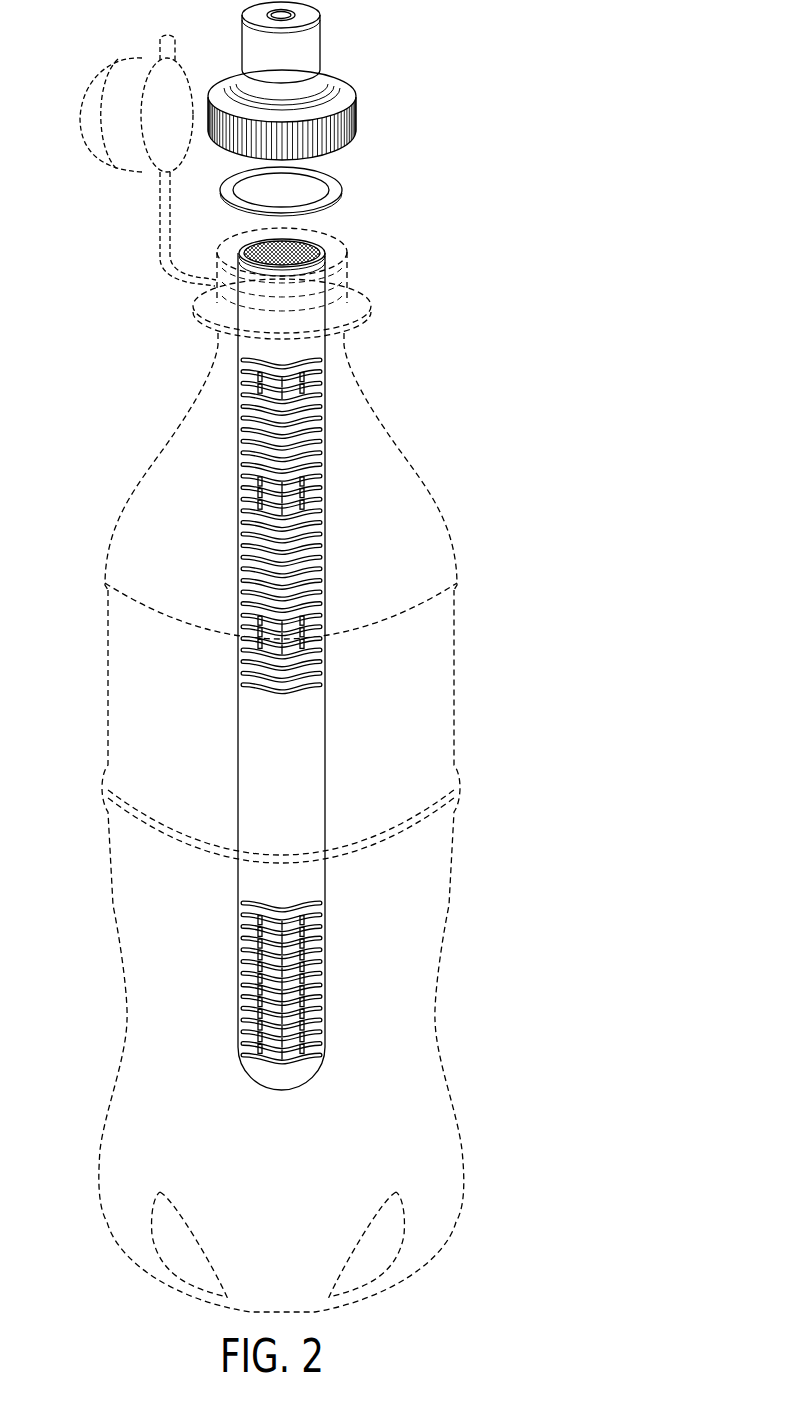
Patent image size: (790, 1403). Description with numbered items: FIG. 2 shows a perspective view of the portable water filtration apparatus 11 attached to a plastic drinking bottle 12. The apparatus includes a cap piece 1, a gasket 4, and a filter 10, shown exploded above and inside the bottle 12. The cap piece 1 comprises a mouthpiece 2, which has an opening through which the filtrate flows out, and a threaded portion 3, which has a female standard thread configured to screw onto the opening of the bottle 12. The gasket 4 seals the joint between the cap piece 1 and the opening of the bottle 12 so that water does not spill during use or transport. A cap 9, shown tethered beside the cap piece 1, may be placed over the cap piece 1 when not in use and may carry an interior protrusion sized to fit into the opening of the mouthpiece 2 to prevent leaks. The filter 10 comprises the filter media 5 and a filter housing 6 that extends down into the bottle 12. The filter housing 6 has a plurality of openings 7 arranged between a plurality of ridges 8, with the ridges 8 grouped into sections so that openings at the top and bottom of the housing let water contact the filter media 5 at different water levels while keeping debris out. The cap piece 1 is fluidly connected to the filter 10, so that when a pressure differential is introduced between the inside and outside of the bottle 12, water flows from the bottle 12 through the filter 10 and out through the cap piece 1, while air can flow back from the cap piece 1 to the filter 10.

The cap piece 1 is at (330, 112).
The mouthpiece 2 is at (320, 28).
The threaded portion 3 is at (355, 120).
The gasket 4 is at (335, 190).
The filter media 5 is at (253, 253).
The filter housing 6 is at (308, 773).
The openings 7 is at (300, 380).
The ridges 8 is at (302, 711).
The cap 9 is at (120, 170).
The filter 10 is at (305, 654).
The filtration apparatus 11 is at (337, 673).
The plastic drinking bottle 12 is at (430, 440).